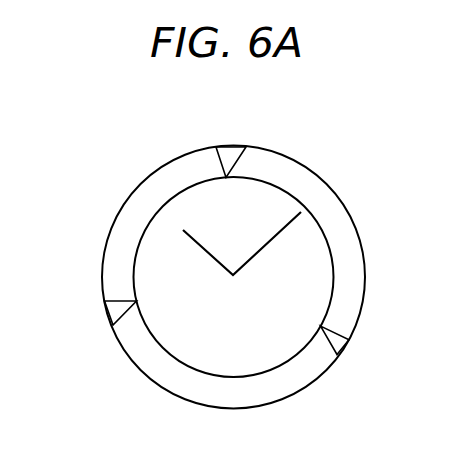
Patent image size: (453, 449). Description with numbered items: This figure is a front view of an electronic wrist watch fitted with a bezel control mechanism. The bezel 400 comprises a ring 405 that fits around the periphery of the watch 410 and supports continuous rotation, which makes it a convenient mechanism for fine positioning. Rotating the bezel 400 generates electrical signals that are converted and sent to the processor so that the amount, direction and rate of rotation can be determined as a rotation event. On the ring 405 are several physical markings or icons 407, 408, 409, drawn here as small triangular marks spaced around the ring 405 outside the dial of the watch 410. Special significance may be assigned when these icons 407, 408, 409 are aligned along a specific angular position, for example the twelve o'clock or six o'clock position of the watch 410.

The bezel 400 is at (139, 169).
The ring 405 is at (324, 177).
The physical marking or icon 407 is at (236, 152).
The physical marking or icon 408 is at (343, 350).
The physical marking or icon 409 is at (108, 304).
The watch 410 is at (222, 329).